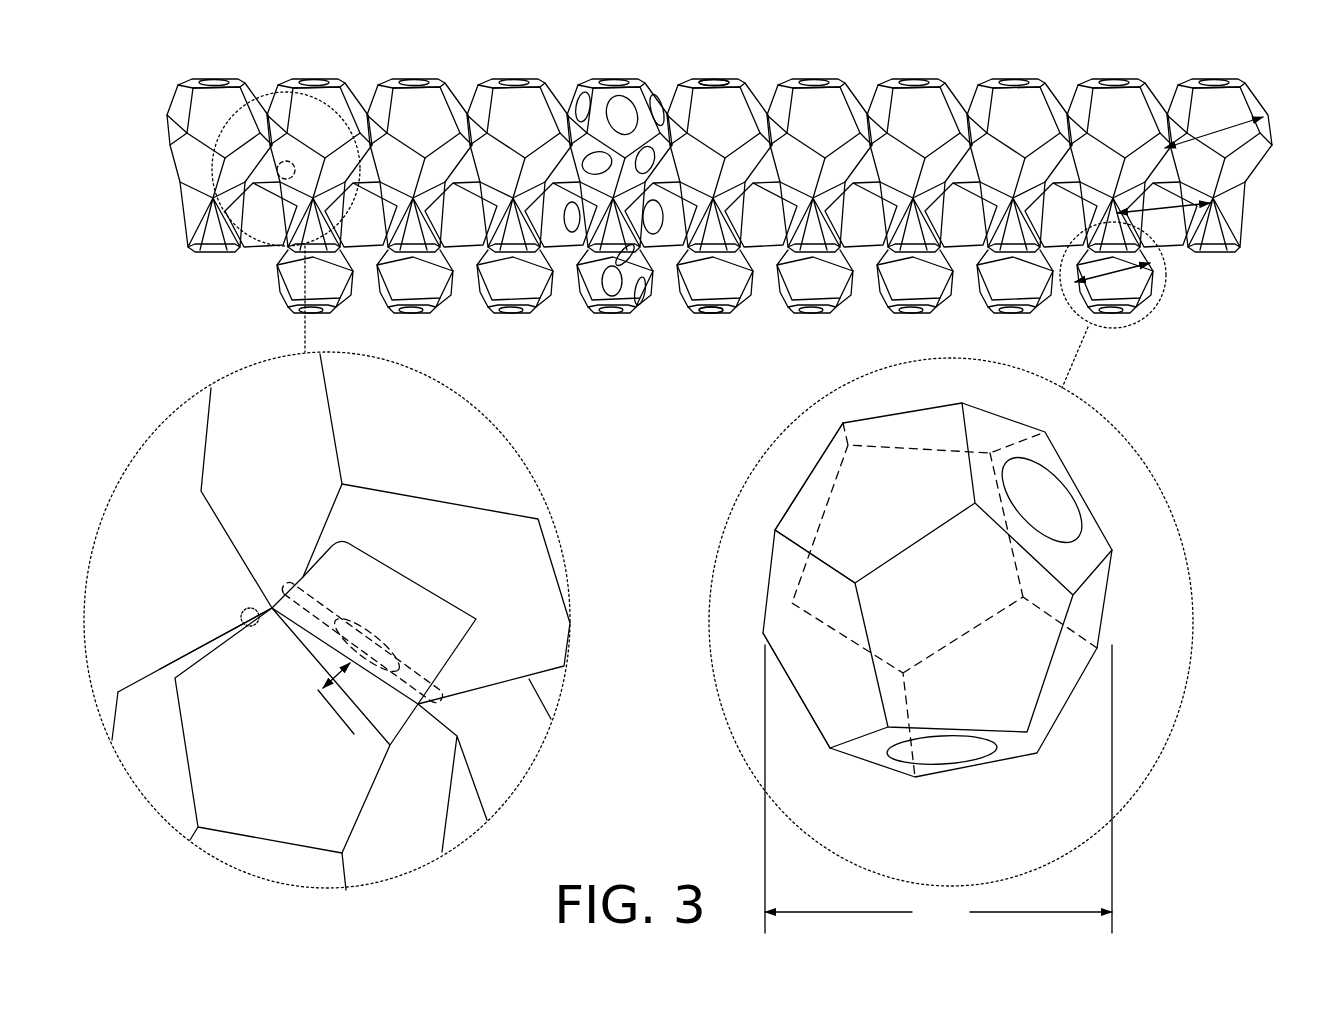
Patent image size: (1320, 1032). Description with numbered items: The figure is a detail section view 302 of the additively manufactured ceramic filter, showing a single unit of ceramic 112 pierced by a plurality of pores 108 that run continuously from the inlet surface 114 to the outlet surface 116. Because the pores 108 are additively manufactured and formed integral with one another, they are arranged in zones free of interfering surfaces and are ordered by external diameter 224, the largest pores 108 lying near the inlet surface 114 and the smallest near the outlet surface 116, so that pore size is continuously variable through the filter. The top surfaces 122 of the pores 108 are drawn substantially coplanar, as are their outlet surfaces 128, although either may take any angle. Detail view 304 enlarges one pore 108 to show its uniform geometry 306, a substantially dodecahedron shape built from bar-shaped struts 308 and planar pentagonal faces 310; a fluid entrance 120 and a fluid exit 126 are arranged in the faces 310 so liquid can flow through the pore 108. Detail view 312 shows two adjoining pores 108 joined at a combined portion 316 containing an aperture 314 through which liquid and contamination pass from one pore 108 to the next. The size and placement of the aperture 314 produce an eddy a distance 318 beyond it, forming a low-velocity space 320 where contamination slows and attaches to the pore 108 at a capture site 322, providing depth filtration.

The detail section view 302 is at (125, 53).
The pore 108 is at (287, 82).
The single unit of ceramic 112 is at (375, 82).
The inlet surface 114 is at (592, 72).
The outlet surface 116 is at (590, 318).
The fluid entrance 120 is at (658, 97).
The top surface 122 is at (870, 85).
The fluid exit 126 is at (642, 294).
The outlet surface of pore 128 is at (905, 312).
The external diameter 224 is at (1250, 165).
The detail view 304 is at (757, 455).
The uniform geometry 306 is at (767, 525).
The strut 308 is at (800, 585).
The face 310 is at (805, 621).
The detail view 312 is at (118, 455).
The aperture 314 is at (367, 638).
The combined portion 316 is at (406, 576).
The distance 318 is at (354, 734).
The space 320 is at (247, 607).
The capture site 322 is at (223, 625).